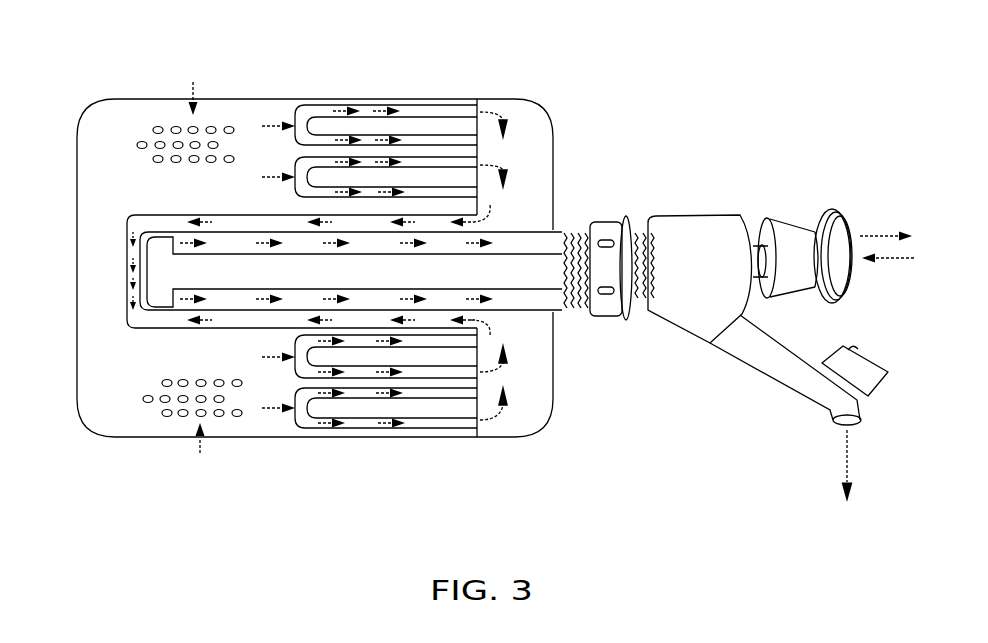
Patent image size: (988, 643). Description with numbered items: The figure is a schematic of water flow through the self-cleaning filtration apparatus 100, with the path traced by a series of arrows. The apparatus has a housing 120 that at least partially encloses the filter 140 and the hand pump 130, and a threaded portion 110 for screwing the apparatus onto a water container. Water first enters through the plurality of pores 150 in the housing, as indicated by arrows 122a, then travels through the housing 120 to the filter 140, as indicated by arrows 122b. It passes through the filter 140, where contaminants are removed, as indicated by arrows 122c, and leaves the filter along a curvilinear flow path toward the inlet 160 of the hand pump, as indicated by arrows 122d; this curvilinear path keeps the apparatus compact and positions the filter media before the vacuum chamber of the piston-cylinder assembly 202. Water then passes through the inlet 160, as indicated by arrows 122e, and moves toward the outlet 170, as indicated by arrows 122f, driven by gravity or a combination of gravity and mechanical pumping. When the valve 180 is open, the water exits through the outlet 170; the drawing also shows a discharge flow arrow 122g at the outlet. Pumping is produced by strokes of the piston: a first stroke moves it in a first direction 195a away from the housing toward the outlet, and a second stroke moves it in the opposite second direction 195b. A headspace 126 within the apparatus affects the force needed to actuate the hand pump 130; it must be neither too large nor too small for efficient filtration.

The filtration apparatus 100 is at (720, 72).
The threaded portion 110 is at (643, 305).
The housing 120 is at (105, 440).
The arrows indicating water flow from the pores 122a is at (193, 82).
The arrows indicating water flow through the housing to the filter 122b is at (273, 124).
The arrows indicating water flow through the filter 122c is at (378, 110).
The arrows indicating water flow out of the filter toward the inlet 122d is at (407, 217).
The arrows indicating water flow through the inlet 122e is at (128, 240).
The arrows indicating water flow toward the outlet 122f is at (475, 290).
The discharge flow 122g is at (845, 455).
The headspace 126 is at (537, 137).
The hand pump 130 is at (755, 155).
The filter 140 is at (357, 428).
The plurality of pores 150 is at (238, 418).
The inlet 160 is at (130, 280).
The outlet 170 is at (870, 408).
The valve 180 is at (873, 377).
The first direction 195a is at (883, 234).
The second direction 195b is at (883, 262).
The piston-cylinder assembly 202 is at (178, 307).